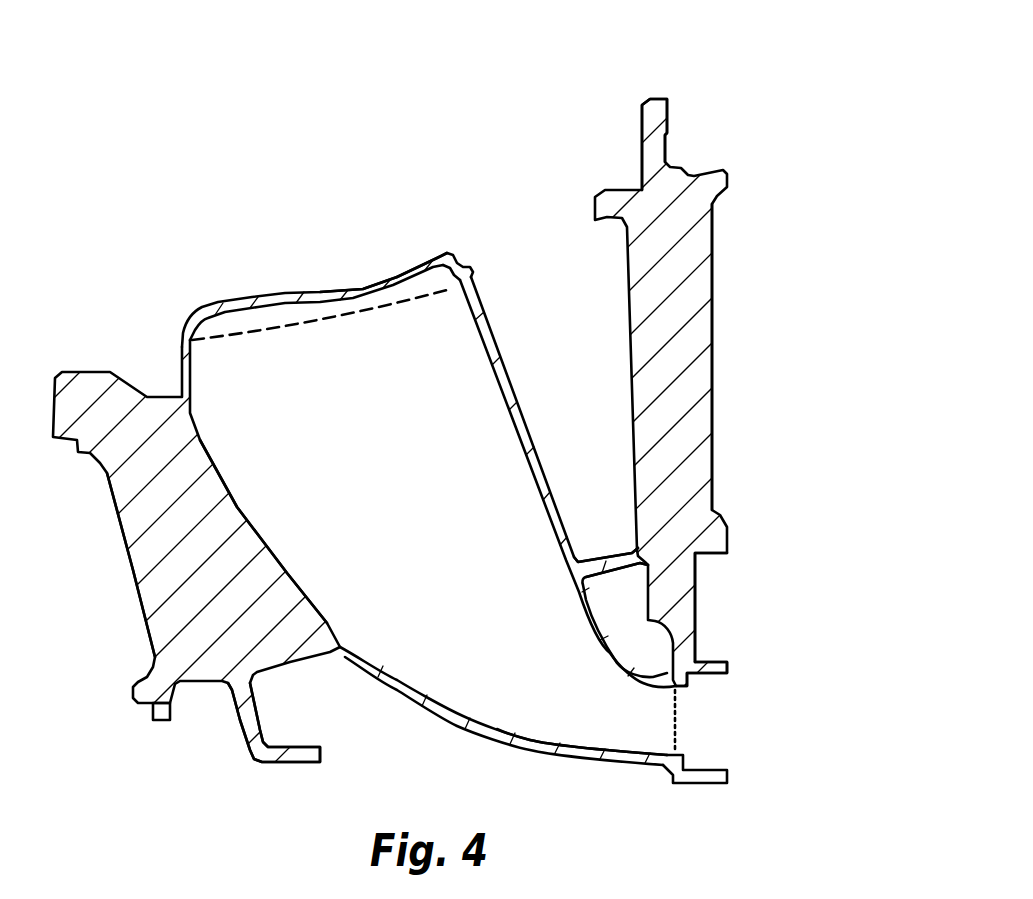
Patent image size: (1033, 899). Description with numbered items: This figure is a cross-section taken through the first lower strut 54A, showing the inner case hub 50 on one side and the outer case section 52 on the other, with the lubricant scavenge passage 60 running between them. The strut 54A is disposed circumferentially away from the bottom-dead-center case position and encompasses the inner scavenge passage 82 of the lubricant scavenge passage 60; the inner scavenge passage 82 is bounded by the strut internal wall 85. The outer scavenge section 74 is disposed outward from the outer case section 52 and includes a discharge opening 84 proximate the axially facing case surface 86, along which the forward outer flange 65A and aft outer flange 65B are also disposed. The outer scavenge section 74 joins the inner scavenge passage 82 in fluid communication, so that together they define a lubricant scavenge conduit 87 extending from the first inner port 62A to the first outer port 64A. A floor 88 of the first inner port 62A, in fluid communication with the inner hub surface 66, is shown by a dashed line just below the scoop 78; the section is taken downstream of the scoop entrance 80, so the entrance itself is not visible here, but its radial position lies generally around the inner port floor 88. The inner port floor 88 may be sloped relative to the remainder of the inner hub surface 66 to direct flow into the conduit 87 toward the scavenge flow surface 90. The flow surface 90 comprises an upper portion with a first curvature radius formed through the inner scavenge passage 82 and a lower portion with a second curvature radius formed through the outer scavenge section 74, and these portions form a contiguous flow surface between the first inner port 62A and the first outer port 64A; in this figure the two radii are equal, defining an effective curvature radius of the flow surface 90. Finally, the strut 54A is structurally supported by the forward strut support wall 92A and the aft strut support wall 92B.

The inner case hub 50 is at (575, 214).
The outer case section 52 is at (598, 537).
The first lower strut 54A is at (616, 99).
The lubricant scavenge passage 60 is at (118, 298).
The first inner port 62A is at (244, 281).
The first outer port 64A is at (744, 785).
The forward outer flange 65A is at (257, 760).
The aft outer flange 65B is at (724, 648).
The inner hub surface 66 is at (471, 268).
The outer scavenge section 74 is at (484, 760).
The scoop 78 is at (355, 291).
The scoop entrance 80 is at (404, 254).
The inner scavenge passage 82 is at (546, 401).
The discharge opening 84 is at (699, 720).
The strut internal wall 85 is at (490, 342).
The axially facing case surface 86 is at (751, 569).
The scavenge conduit 87 is at (433, 540).
The inner port floor 88 is at (323, 322).
The scavenge flow surface 90 is at (237, 503).
The forward strut support wall 92A is at (96, 571).
The aft strut support wall 92B is at (730, 434).